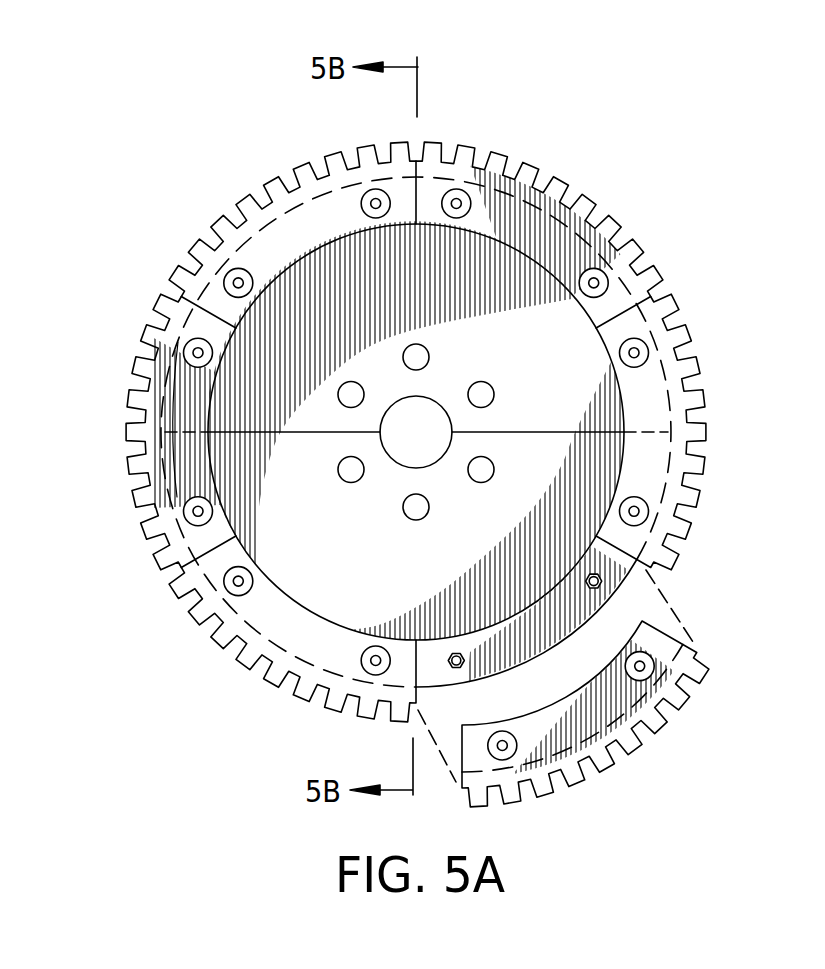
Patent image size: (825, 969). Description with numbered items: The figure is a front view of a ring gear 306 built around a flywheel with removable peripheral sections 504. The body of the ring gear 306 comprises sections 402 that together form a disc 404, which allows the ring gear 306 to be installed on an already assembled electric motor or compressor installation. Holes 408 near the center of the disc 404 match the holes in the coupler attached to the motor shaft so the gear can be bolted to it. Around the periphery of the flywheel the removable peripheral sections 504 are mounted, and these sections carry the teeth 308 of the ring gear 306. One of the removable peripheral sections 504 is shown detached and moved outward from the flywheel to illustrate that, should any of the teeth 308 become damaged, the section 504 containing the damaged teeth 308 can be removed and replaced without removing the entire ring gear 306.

The ring gear 306 is at (434, 432).
The teeth 308 is at (483, 158).
The sections 402 is at (570, 392).
The disc 404 is at (358, 663).
The holes 408 is at (413, 512).
The removable peripheral sections 504 is at (587, 727).